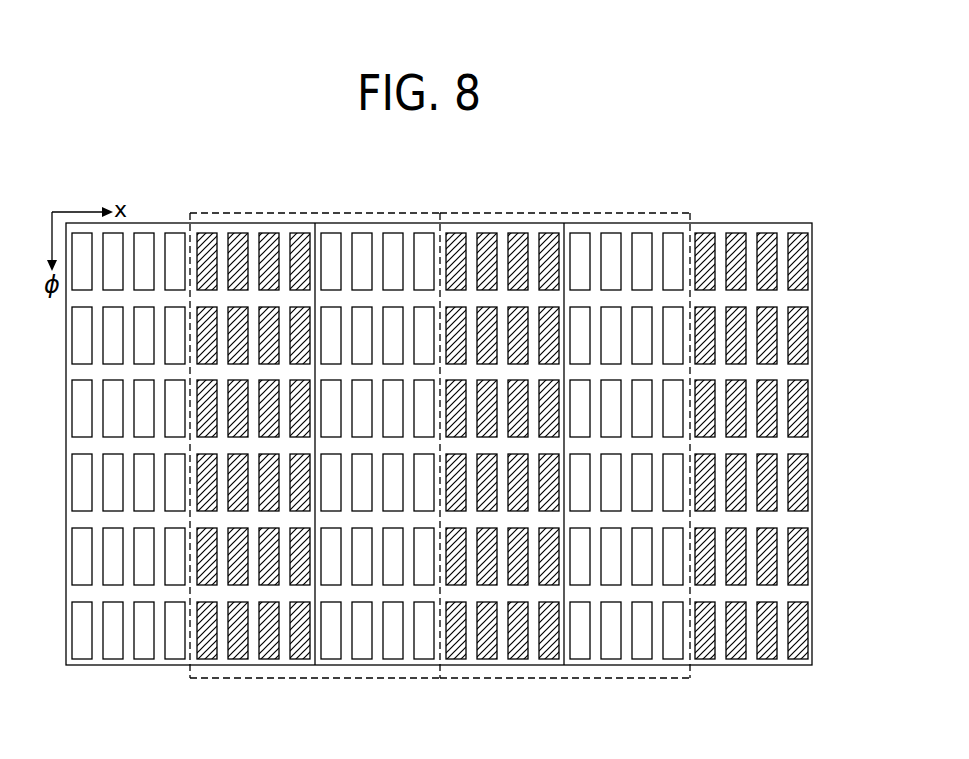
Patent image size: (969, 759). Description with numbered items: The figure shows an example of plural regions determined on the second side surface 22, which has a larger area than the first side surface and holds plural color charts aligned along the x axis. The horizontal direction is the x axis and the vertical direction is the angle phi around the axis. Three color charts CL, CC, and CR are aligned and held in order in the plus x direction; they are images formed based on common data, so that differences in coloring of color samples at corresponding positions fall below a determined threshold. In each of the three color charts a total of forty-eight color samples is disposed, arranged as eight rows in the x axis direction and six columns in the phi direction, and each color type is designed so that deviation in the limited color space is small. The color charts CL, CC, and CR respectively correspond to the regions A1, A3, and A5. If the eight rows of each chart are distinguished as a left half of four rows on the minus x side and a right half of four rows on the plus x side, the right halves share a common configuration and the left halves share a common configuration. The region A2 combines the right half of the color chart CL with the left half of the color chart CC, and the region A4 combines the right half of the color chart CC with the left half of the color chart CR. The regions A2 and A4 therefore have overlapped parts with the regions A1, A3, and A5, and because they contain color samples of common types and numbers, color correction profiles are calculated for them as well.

The second side surface 22 is at (752, 208).
The region A1 is at (66, 668).
The region A2 is at (440, 213).
The region A3 is at (315, 668).
The region A4 is at (690, 213).
The region A5 is at (564, 668).
The color chart CL is at (196, 650).
The color chart CC is at (444, 650).
The color chart CR is at (694, 648).